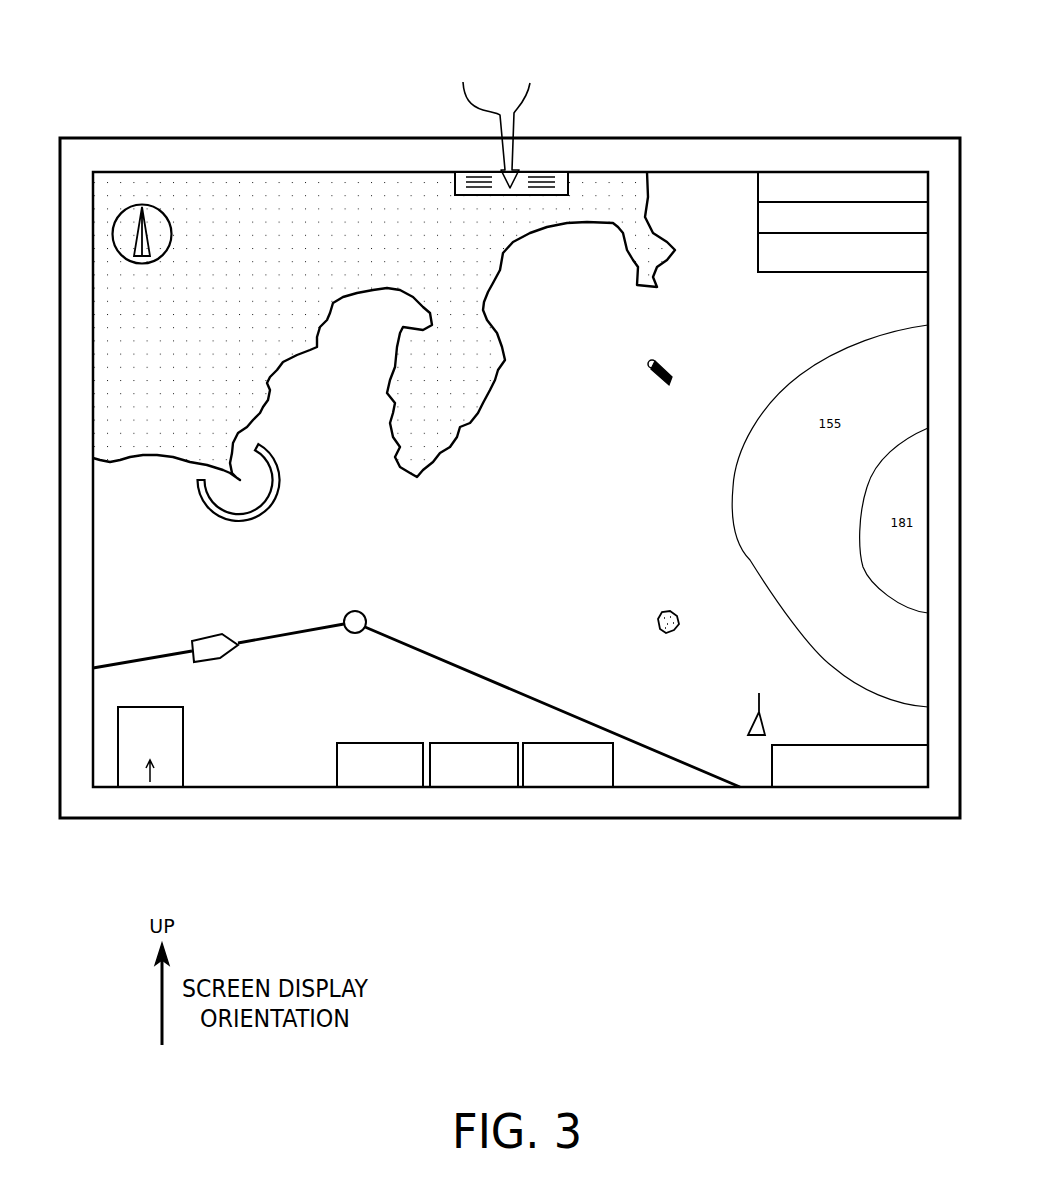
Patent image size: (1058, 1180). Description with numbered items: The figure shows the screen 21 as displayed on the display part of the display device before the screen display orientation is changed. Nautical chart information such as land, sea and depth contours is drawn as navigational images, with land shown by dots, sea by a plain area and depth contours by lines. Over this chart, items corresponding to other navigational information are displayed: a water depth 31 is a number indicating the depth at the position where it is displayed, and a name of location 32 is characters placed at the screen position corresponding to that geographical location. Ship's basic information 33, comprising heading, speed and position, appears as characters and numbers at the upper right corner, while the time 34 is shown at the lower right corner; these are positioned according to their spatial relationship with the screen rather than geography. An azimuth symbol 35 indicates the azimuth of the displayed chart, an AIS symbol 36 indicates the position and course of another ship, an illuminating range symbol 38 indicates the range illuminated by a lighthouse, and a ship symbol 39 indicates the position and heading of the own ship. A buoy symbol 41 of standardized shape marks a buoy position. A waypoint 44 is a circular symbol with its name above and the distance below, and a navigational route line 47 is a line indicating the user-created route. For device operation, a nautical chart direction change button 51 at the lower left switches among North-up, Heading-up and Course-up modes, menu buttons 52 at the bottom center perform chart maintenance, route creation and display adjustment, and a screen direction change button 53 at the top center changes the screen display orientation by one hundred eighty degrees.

The display unit 21 is at (86, 128).
The water depth 31 is at (748, 665).
The name of location 32 is at (668, 655).
The ship's basic information 33 is at (830, 173).
The time 34 is at (865, 780).
The azimuth symbol 35 is at (158, 227).
The AIS symbol 36 is at (757, 737).
The illuminating range symbol 38 is at (283, 500).
The ship symbol 39 is at (207, 660).
The buoy symbol 41 is at (660, 366).
The waypoint 44 is at (343, 613).
The navigational route line 47 is at (260, 643).
The nautical chart direction change button 51 is at (133, 777).
The menu buttons 52 is at (478, 780).
The screen direction change button 53 is at (473, 178).